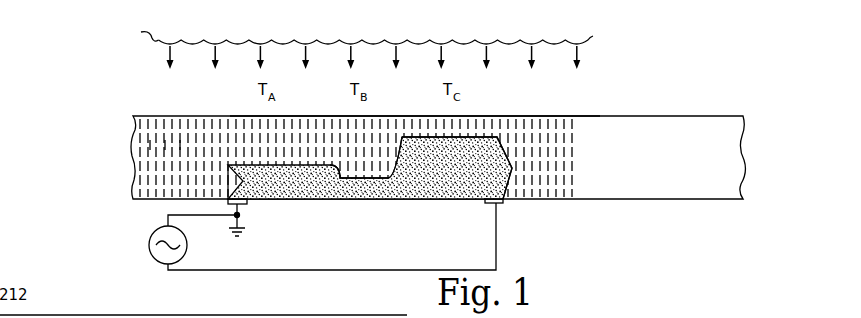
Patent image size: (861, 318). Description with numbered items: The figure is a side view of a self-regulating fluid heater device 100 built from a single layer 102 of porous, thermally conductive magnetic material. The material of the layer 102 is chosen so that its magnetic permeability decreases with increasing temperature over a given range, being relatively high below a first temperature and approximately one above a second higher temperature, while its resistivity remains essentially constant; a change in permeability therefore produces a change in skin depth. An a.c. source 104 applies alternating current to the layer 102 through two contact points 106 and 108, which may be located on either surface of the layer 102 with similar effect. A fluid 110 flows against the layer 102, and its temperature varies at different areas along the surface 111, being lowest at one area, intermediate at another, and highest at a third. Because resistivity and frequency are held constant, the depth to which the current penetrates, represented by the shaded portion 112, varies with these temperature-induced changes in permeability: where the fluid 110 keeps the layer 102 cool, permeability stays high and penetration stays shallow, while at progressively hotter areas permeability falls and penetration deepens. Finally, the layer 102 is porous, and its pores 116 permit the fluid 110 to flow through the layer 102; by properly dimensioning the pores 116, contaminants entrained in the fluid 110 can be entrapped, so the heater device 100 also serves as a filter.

The heater device 100 is at (603, 206).
The layer 102 is at (733, 178).
The source 104 is at (150, 243).
The contact point 106 is at (246, 204).
The contact point 108 is at (483, 205).
The fluid 110 is at (354, 46).
The surface 111 is at (598, 115).
The shaded portion 112 is at (386, 193).
The pores 116 is at (210, 160).